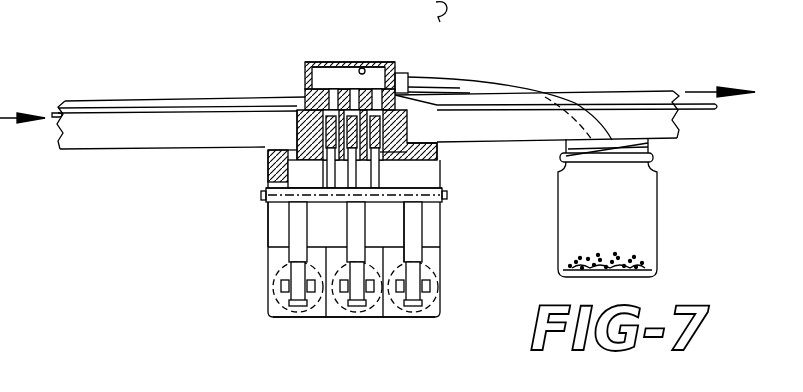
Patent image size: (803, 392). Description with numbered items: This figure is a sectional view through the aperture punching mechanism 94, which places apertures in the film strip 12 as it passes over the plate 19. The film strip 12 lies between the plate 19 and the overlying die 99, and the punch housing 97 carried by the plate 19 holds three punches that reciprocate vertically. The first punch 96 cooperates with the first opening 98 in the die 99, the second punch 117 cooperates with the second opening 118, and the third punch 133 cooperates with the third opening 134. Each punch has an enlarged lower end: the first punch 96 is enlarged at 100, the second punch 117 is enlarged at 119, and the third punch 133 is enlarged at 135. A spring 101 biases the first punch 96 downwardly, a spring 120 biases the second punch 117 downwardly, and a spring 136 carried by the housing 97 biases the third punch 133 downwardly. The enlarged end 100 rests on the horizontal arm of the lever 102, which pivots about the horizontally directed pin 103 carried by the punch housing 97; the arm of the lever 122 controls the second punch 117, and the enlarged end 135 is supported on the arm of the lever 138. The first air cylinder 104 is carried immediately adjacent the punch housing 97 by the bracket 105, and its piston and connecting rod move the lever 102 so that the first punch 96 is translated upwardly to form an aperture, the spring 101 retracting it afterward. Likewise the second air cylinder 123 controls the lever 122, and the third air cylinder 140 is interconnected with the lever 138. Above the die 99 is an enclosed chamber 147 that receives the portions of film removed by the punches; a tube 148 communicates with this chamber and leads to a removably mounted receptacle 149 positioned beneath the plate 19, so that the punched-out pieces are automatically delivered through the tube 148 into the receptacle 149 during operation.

The film strip 12 is at (141, 108).
The plate 19 is at (100, 146).
The aperture punching mechanism 94 is at (292, 32).
The first punch 96 is at (335, 135).
The punch housing 97 is at (441, 152).
The first opening 98 is at (323, 66).
The die 99 is at (306, 100).
The enlarged lower end of first punch 100 is at (297, 190).
The spring 101 is at (276, 158).
The lever 102 is at (297, 249).
The pin 103 is at (260, 199).
The first air cylinder 104 is at (276, 287).
The bracket 105 is at (268, 221).
The second punch 117 is at (296, 138).
The second opening 118 is at (355, 70).
The enlarged lower end of second punch 119 is at (339, 185).
The spring 120 is at (352, 145).
The lever 122 is at (365, 223).
The second air cylinder 123 is at (331, 316).
The third punch 133 is at (382, 130).
The third opening 134 is at (384, 63).
The enlarged lower end of third punch 135 is at (380, 152).
The spring 136 is at (399, 131).
The lever 138 is at (422, 233).
The third air cylinder 140 is at (438, 293).
The enclosed chamber 147 is at (363, 68).
The tube 148 is at (472, 80).
The receptacle 149 is at (657, 196).